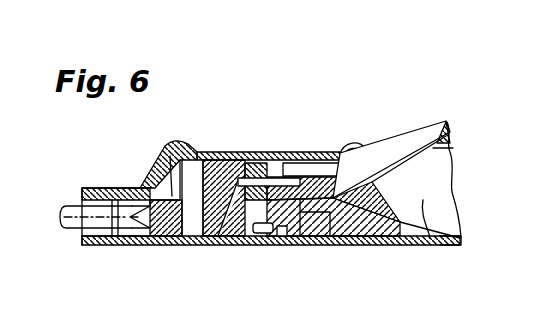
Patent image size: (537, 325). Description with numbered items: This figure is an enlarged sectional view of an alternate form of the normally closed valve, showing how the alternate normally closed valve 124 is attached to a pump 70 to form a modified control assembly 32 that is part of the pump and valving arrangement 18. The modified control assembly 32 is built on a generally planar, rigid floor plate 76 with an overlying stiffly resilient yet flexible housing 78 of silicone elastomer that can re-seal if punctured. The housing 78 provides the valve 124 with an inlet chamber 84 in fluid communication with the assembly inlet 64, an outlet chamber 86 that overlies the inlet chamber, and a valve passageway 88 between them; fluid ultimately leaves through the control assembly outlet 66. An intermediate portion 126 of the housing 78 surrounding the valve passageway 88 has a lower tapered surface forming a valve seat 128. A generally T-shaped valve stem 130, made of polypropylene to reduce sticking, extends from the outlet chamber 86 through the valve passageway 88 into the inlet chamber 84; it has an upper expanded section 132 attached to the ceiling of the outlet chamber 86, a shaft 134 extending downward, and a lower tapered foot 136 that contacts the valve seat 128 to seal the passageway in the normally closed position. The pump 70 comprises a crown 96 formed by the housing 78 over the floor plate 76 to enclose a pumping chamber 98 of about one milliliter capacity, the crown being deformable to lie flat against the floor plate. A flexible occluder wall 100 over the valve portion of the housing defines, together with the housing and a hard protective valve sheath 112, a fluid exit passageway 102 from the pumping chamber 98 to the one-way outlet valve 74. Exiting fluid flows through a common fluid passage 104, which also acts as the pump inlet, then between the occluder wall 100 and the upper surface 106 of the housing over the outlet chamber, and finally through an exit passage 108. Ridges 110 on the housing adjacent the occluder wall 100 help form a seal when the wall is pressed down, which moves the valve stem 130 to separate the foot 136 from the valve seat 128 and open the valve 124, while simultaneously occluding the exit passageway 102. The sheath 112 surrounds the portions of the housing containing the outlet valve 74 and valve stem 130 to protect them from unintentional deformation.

The pump and valving arrangement 18 is at (432, 110).
The modified control assembly 32 is at (457, 248).
The assembly inlet 64 is at (260, 245).
The control assembly outlet 66 is at (117, 245).
The pump 70 is at (436, 153).
The one-way outlet valve 74 is at (163, 245).
The floor plate 76 is at (385, 245).
The housing 78 is at (423, 210).
The inlet chamber 84 is at (310, 245).
The outlet chamber 86 is at (182, 245).
The valve passageway 88 is at (213, 245).
The crown 96 is at (442, 123).
The pumping chamber 98 is at (427, 191).
The occluder wall 100 is at (310, 158).
The fluid exit passageway 102 is at (327, 157).
The common fluid passage 104 is at (435, 245).
The upper surface 106 is at (214, 152).
The exit passage 108 is at (162, 163).
The ridges 110 is at (278, 160).
The valve sheath 112 is at (150, 176).
The alternate normally closed valve 124 is at (198, 146).
The intermediate portion 126 is at (225, 245).
The valve seat 128 is at (242, 245).
The valve stem 130 is at (312, 245).
The upper expanded section 132 is at (297, 160).
The shaft 134 is at (250, 160).
The lower tapered foot 136 is at (272, 245).